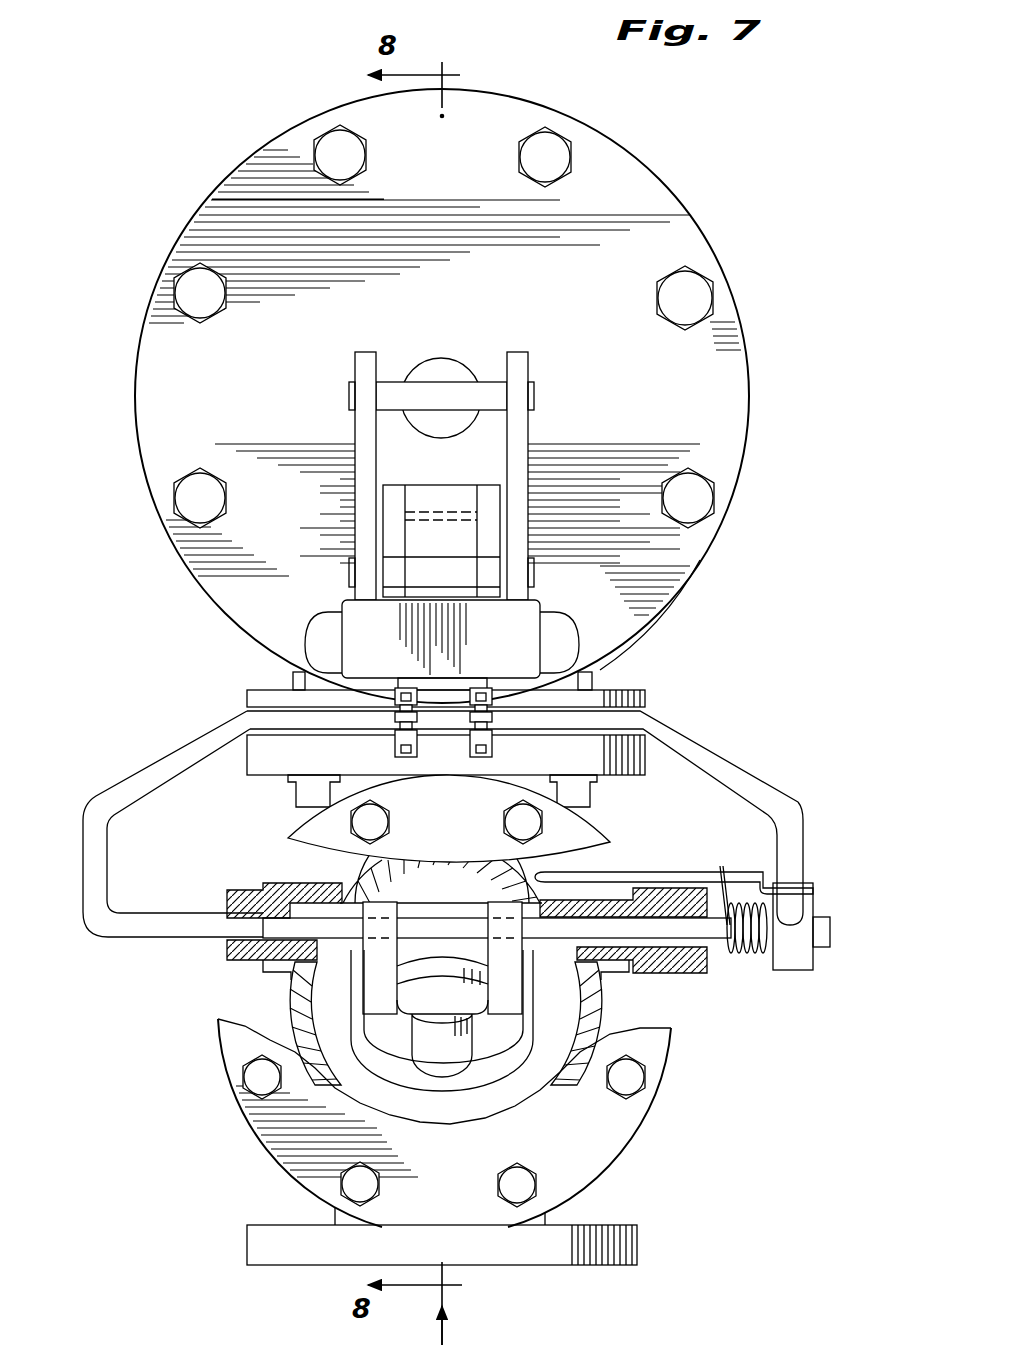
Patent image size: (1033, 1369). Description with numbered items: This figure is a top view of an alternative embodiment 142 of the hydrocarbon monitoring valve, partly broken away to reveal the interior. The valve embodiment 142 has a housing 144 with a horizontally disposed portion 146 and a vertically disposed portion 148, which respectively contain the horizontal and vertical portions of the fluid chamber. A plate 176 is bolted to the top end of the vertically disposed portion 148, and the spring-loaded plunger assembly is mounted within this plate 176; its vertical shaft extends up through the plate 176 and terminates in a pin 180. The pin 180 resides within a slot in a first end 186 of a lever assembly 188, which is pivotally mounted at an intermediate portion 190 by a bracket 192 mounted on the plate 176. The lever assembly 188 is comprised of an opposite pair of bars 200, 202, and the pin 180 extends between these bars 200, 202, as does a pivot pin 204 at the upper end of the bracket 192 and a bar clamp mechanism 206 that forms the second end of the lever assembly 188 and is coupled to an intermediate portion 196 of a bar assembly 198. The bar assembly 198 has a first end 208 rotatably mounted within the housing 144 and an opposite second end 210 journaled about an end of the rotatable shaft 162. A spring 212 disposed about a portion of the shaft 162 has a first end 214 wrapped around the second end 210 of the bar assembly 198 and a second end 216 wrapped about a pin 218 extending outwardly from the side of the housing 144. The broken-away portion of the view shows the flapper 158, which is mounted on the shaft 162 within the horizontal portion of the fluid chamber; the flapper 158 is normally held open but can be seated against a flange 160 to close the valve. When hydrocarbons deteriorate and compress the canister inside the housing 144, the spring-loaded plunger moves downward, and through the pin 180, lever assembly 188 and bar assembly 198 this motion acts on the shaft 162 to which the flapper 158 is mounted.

The alternative embodiment of the hydrocarbon monitoring valve 142 is at (668, 1140).
The housing 144 is at (258, 1128).
The horizontally disposed portion of the housing 146 is at (603, 1000).
The vertically disposed portion of the housing 148 is at (660, 614).
The flapper 158 is at (482, 1072).
The yoke 160 is at (427, 893).
The rotatable shaft 162 is at (712, 960).
The plate 176 is at (685, 242).
The pin 180 is at (400, 385).
The first end of the lever assembly 186 is at (516, 382).
The lever assembly 188 is at (351, 476).
The intermediate portion of the lever assembly 190 is at (522, 522).
The bracket 192 is at (395, 527).
The intermediate portion of the bar assembly 196 is at (598, 720).
The bar assembly 198 is at (742, 756).
The bar of the lever assembly 200 is at (528, 432).
The bar of the lever assembly 202 is at (355, 432).
The pivot pin 204 is at (535, 575).
The bar clamp mechanism 206 is at (368, 606).
The first end of the bar assembly 208 is at (185, 935).
The second end of the bar assembly 210 is at (803, 835).
The spring 212 is at (755, 960).
The first end of the spring 214 is at (815, 901).
The second end of the spring 216 is at (712, 870).
The pin 218 is at (750, 868).